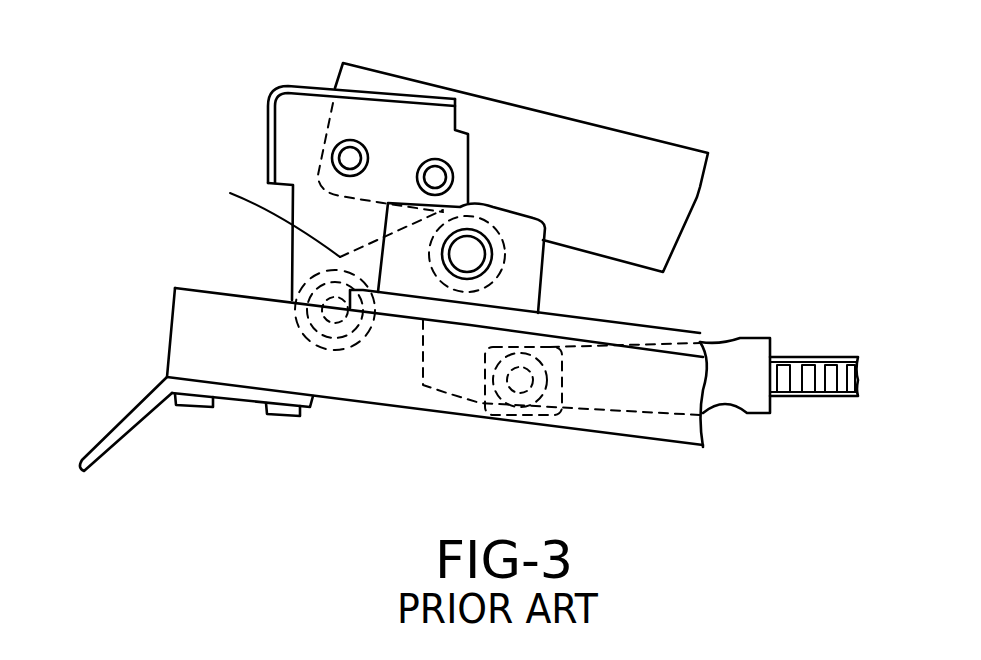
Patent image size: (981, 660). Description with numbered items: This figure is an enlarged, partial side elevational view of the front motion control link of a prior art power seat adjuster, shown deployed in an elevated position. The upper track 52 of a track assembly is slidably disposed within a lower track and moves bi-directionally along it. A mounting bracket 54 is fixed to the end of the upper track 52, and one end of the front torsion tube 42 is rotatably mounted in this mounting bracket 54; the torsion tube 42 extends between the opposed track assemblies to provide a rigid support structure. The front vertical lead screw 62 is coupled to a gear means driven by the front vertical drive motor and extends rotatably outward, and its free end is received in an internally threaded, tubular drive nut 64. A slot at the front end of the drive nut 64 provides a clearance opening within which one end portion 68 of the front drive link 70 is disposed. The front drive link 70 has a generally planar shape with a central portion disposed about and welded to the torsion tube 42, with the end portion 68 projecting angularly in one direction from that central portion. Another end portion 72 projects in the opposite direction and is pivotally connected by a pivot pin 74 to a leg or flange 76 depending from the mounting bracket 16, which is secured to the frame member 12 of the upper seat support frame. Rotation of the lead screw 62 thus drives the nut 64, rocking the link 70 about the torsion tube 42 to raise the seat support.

The frame member 12 is at (537, 123).
The mounting bracket 16 is at (291, 85).
The front torsion tube 42 is at (490, 265).
The upper track 52 is at (193, 297).
The mounting bracket 54 is at (540, 226).
The front vertical lead screw 62 is at (788, 357).
The drive nut 64 is at (745, 417).
The end portion of front drive link 68 is at (553, 407).
The front drive link 70 is at (441, 360).
The end portion of front drive link 72 is at (230, 193).
The pivot pin 74 is at (335, 318).
The leg or flange 76 is at (290, 248).